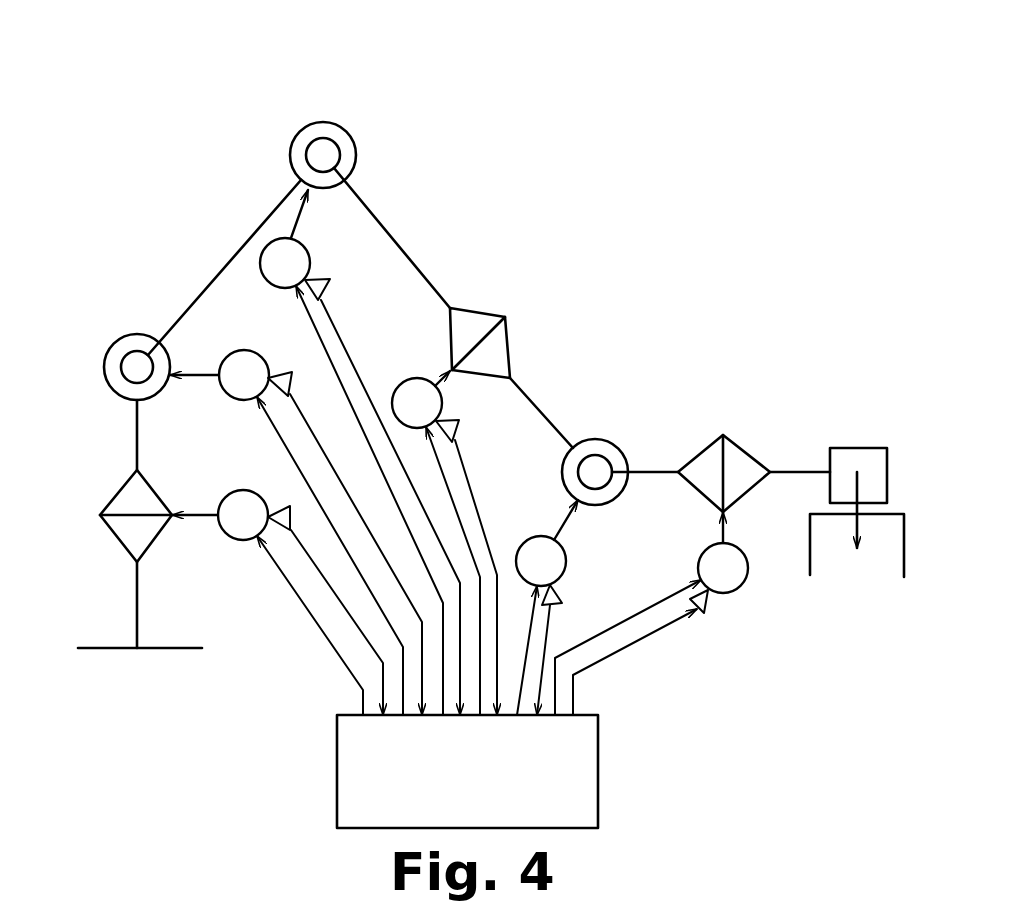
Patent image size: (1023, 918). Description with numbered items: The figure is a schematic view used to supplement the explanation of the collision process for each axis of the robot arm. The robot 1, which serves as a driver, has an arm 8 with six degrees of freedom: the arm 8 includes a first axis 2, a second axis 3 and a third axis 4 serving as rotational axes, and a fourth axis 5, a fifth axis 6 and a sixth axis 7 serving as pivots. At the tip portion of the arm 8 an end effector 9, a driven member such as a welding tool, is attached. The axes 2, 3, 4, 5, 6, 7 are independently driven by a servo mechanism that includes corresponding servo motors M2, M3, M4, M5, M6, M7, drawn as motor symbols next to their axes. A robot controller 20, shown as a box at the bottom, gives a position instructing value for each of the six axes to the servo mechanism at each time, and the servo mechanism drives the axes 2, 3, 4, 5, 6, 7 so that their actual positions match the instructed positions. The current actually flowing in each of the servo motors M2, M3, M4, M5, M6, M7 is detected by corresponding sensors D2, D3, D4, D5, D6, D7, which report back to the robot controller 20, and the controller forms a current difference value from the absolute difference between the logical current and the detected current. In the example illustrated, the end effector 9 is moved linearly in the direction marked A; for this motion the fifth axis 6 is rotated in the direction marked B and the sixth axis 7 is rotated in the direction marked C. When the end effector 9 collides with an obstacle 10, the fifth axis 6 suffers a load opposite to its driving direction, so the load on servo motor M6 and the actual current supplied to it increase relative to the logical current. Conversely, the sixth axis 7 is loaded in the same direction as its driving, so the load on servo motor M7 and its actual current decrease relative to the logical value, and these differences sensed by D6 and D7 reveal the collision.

The robot 1 is at (783, 105).
The first axis 2 is at (160, 497).
The second axis 3 is at (488, 312).
The third axis 4 is at (745, 427).
The fourth axis 5 is at (114, 344).
The fifth axis 6 is at (338, 122).
The sixth axis 7 is at (611, 443).
The arm 8 is at (450, 137).
The end effector 9 is at (840, 448).
The obstacle 10 is at (904, 547).
The robot controller 20 is at (598, 747).
The servo motor M2 is at (267, 602).
The servo motor M3 is at (436, 543).
The servo motor M4 is at (651, 613).
The servo motor M5 is at (286, 532).
The servo motor M6 is at (351, 452).
The servo motor M7 is at (547, 607).
The sensor D2 is at (290, 508).
The sensor D3 is at (458, 428).
The sensor D4 is at (703, 614).
The sensor D5 is at (288, 372).
The sensor D6 is at (330, 285).
The sensor D7 is at (562, 601).
The direction of end effector movement A is at (885, 547).
The rotation direction of fifth axis B is at (360, 218).
The rotation direction of sixth axis C is at (620, 430).